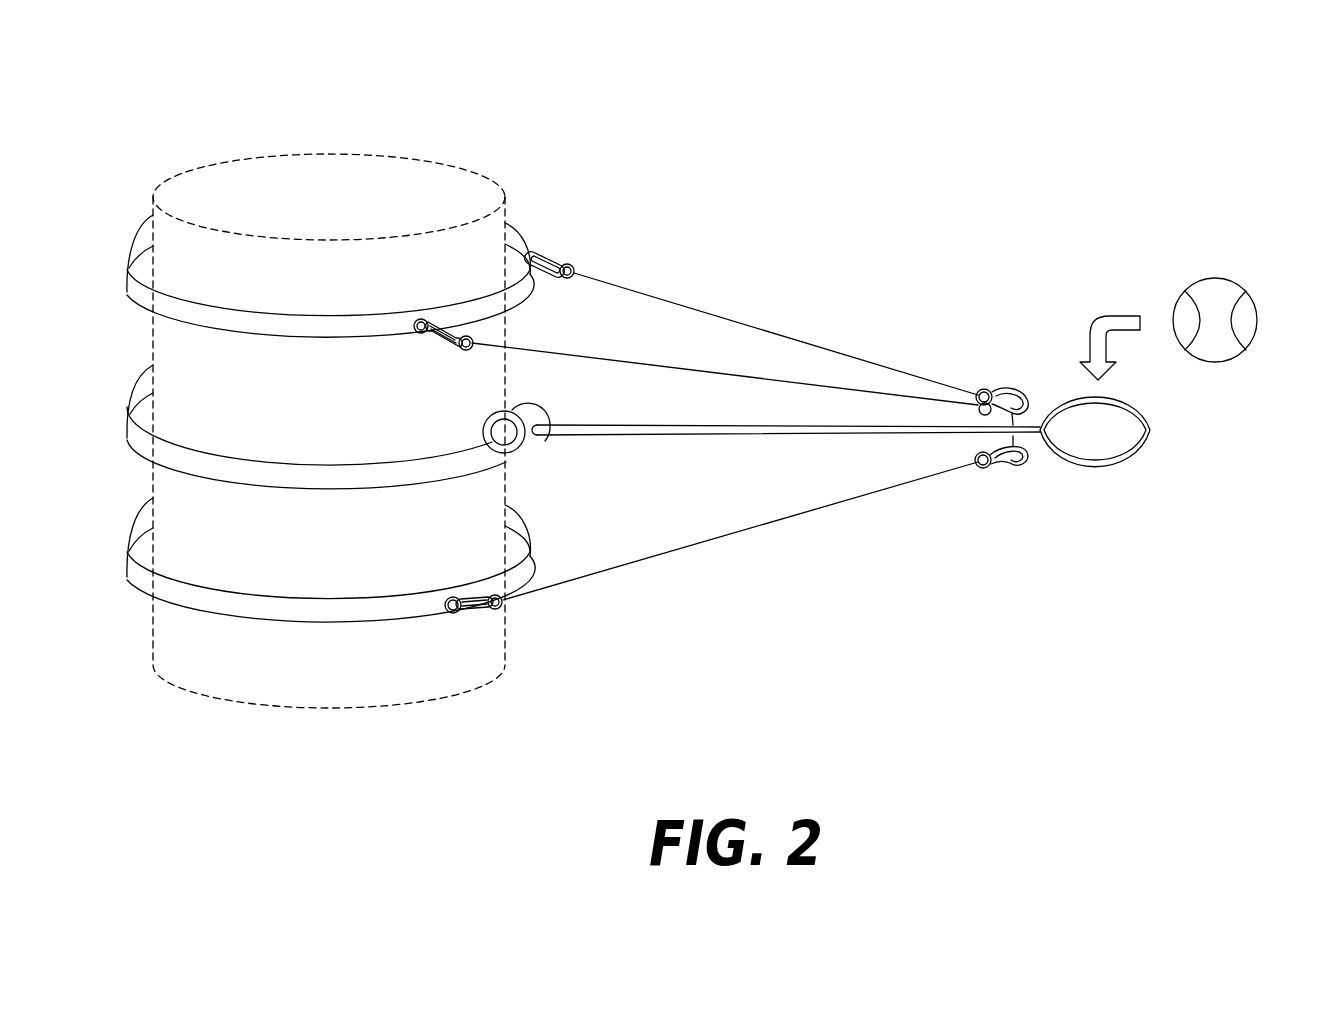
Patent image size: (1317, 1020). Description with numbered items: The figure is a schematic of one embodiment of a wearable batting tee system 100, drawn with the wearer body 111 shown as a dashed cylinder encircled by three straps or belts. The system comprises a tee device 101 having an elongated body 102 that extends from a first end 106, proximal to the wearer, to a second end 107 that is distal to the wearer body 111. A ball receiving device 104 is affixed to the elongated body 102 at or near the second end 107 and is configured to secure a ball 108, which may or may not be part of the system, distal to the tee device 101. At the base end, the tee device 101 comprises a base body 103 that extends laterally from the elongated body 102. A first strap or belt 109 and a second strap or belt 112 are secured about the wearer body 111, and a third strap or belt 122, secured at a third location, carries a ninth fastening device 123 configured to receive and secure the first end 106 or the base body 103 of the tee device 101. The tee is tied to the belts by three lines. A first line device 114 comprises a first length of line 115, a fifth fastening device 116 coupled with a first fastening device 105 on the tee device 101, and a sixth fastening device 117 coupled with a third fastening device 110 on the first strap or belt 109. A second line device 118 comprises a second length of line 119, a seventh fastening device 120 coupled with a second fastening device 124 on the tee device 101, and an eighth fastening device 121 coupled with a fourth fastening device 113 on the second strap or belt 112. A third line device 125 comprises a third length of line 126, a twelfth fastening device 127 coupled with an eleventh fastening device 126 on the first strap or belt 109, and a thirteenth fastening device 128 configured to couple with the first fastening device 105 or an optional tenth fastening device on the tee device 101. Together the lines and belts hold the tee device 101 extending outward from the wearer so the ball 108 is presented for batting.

The wearable batting tee system 100 is at (737, 104).
The tee device 101 is at (786, 401).
The elongated body 102 is at (714, 425).
The base body 103 is at (544, 429).
The ball receiving device 104 is at (1130, 407).
The first fastening device 105 is at (991, 375).
The first end 106 is at (540, 413).
The second end 107 is at (1038, 413).
The ball 108 is at (1252, 298).
The first strap or belt 109 is at (128, 300).
The third fastening device 110 is at (435, 327).
The wearer body 111 is at (319, 152).
The second strap or belt 112 is at (128, 577).
The fourth fastening device 113 is at (493, 571).
The first line device 114 is at (820, 388).
The first length of line 115 is at (776, 334).
The fifth fastening device 116 is at (985, 432).
The sixth fastening device 117 is at (460, 351).
The second line device 118 is at (740, 531).
The second length of line 119 is at (672, 553).
The seventh fastening device 120 is at (976, 470).
The eighth fastening device 121 is at (502, 596).
The third strap or belt 122 is at (128, 440).
The ninth fastening device 123 is at (468, 433).
The second fastening device 124 is at (995, 483).
The third line device 125 is at (853, 358).
The eleventh fastening device 126 is at (633, 256).
The twelfth fastening device 127 is at (574, 265).
The thirteenth fastening device 128 is at (982, 389).